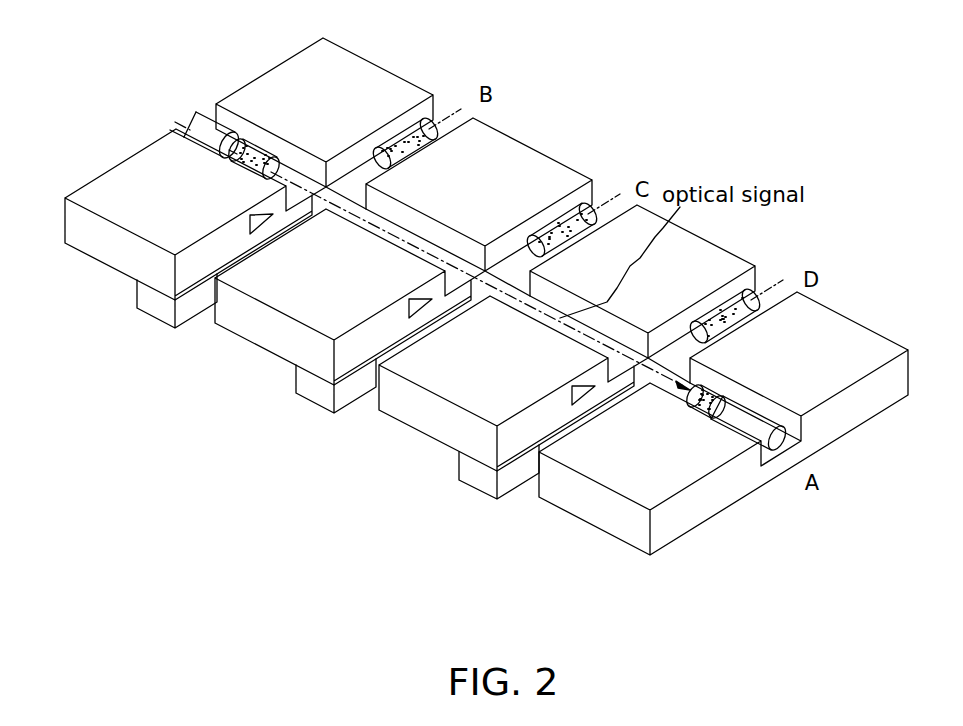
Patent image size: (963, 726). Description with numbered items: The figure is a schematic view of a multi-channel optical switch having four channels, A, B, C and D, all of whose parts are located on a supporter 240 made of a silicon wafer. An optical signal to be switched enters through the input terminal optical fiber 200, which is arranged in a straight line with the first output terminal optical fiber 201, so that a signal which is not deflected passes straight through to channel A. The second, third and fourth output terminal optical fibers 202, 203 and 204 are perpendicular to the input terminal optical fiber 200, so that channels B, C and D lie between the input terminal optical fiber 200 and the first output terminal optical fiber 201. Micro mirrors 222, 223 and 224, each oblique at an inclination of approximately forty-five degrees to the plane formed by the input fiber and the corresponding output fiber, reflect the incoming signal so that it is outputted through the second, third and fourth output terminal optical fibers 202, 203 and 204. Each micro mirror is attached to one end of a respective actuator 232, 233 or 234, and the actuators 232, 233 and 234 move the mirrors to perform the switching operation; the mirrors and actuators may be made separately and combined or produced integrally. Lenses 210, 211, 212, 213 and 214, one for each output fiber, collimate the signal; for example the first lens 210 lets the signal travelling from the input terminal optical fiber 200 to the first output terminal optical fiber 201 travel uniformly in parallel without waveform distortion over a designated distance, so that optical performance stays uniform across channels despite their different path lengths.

The input terminal optical fiber 200 is at (213, 120).
The first output terminal optical fiber 201 is at (762, 430).
The second output terminal optical fiber 202 is at (447, 118).
The third output terminal optical fiber 203 is at (612, 198).
The fourth output terminal optical fiber 204 is at (786, 291).
The first lens 210 is at (257, 145).
The lens 211 is at (700, 390).
The lens 212 is at (395, 137).
The lens 213 is at (552, 226).
The lens 214 is at (720, 322).
The micro mirror 222 is at (243, 214).
The micro mirror 223 is at (408, 300).
The micro mirror 224 is at (570, 390).
The actuator 232 is at (165, 283).
The actuator 233 is at (330, 372).
The actuator 234 is at (497, 458).
The supporter 240 is at (865, 347).